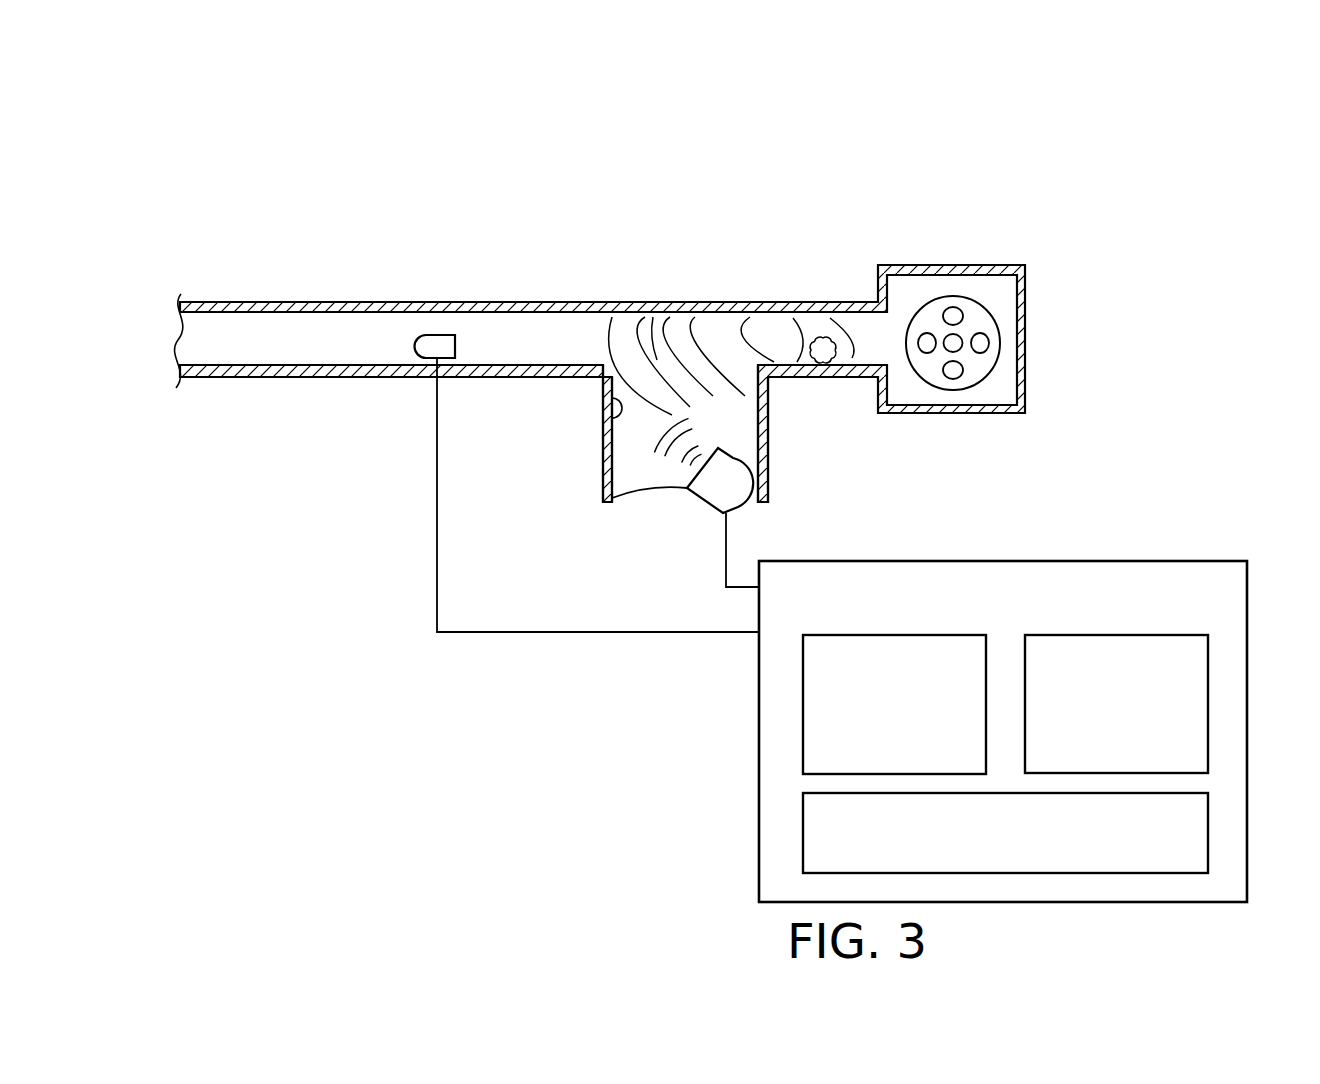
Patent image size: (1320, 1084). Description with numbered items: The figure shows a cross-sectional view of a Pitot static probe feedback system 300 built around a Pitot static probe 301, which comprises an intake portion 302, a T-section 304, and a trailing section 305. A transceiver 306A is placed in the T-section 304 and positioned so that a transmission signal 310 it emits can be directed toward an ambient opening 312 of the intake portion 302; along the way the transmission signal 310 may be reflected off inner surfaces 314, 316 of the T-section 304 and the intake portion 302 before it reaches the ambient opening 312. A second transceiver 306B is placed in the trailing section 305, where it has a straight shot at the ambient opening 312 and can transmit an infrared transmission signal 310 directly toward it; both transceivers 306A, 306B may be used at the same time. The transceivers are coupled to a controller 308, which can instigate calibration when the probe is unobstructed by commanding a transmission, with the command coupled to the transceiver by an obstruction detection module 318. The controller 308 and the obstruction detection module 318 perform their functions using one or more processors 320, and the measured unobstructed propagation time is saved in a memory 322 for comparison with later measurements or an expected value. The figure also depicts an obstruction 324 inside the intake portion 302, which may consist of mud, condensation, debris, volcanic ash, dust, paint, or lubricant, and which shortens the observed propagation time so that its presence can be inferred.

The Pitot static probe feedback system 300 is at (343, 152).
The Pitot static probe 301 is at (800, 172).
The intake portion 302 is at (600, 368).
The T-section 304 is at (600, 447).
The trailing section 305 is at (492, 309).
The transceiver 306A is at (728, 498).
The transceiver 306B is at (412, 352).
The controller 308 is at (1079, 612).
The transmission signal 310 is at (655, 302).
The ambient opening 312 is at (983, 322).
The inner surface 314 is at (603, 421).
The inner surface 316 is at (870, 357).
The obstruction detection module 318 is at (1096, 761).
The processors 320 is at (871, 731).
The memory 322 is at (985, 862).
The obstruction 324 is at (817, 363).